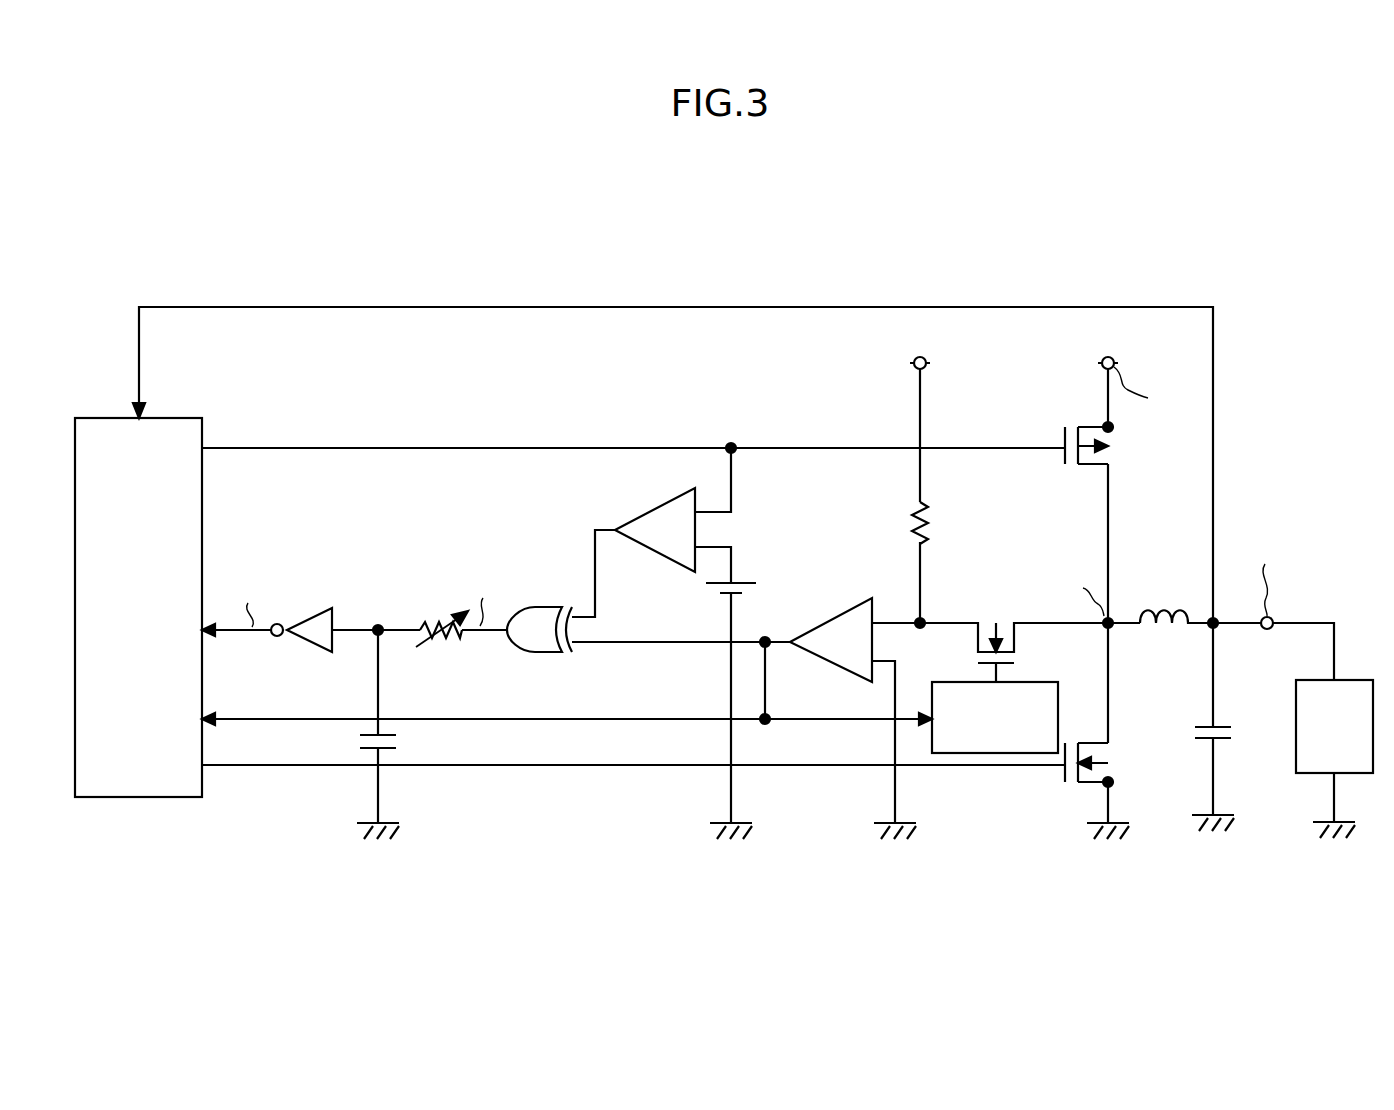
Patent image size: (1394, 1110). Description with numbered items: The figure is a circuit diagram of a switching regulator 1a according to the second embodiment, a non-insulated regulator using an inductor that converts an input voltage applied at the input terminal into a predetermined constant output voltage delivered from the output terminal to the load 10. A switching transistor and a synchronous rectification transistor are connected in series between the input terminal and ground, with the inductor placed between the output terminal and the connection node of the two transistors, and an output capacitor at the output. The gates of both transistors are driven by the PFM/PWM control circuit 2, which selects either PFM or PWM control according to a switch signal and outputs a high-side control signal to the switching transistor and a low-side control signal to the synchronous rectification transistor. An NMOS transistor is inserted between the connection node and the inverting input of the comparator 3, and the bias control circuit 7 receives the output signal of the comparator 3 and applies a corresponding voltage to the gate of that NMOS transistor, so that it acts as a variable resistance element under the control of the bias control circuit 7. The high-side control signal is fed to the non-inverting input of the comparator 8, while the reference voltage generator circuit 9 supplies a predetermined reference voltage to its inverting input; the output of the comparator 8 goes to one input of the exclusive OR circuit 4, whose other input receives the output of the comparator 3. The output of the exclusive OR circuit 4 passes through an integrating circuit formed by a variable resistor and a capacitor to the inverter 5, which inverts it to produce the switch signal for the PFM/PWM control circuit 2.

The switching regulator 1a is at (836, 273).
The PFM/PWM control circuit 2 is at (176, 418).
The comparator 3 is at (832, 606).
The exclusive OR circuit 4 is at (520, 660).
The inverter 5 is at (310, 606).
The bias control circuit 7 is at (1032, 682).
The comparator 8 is at (648, 510).
The reference voltage generator circuit 9 is at (738, 597).
The load 10 is at (1352, 680).